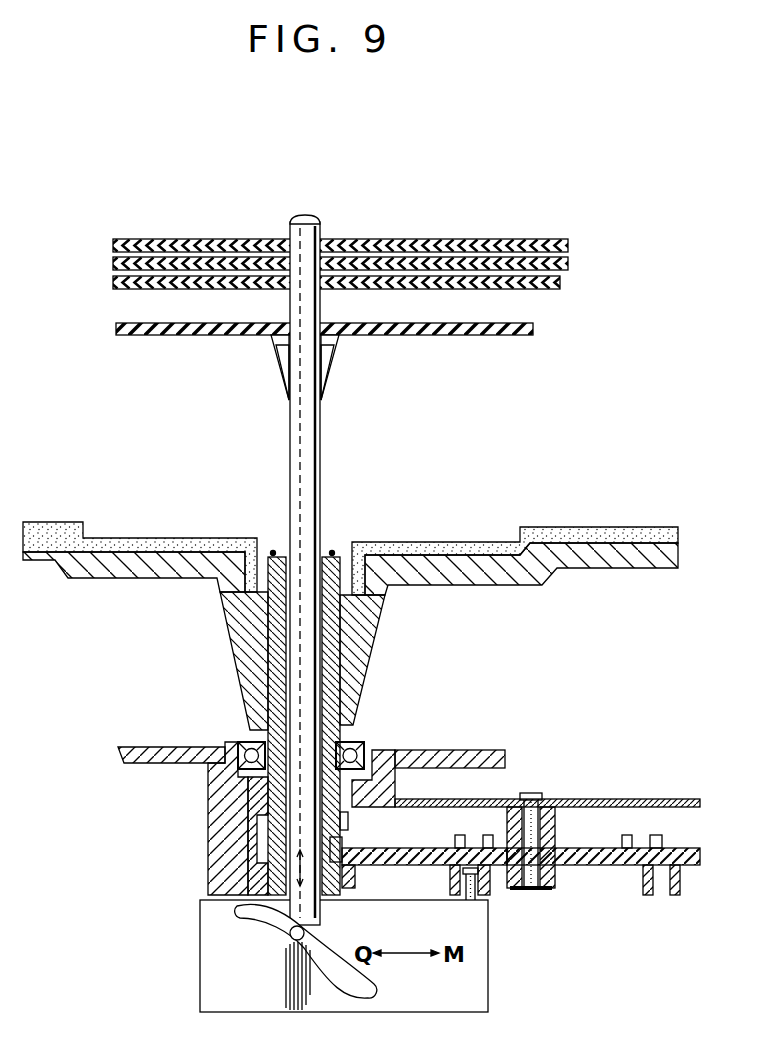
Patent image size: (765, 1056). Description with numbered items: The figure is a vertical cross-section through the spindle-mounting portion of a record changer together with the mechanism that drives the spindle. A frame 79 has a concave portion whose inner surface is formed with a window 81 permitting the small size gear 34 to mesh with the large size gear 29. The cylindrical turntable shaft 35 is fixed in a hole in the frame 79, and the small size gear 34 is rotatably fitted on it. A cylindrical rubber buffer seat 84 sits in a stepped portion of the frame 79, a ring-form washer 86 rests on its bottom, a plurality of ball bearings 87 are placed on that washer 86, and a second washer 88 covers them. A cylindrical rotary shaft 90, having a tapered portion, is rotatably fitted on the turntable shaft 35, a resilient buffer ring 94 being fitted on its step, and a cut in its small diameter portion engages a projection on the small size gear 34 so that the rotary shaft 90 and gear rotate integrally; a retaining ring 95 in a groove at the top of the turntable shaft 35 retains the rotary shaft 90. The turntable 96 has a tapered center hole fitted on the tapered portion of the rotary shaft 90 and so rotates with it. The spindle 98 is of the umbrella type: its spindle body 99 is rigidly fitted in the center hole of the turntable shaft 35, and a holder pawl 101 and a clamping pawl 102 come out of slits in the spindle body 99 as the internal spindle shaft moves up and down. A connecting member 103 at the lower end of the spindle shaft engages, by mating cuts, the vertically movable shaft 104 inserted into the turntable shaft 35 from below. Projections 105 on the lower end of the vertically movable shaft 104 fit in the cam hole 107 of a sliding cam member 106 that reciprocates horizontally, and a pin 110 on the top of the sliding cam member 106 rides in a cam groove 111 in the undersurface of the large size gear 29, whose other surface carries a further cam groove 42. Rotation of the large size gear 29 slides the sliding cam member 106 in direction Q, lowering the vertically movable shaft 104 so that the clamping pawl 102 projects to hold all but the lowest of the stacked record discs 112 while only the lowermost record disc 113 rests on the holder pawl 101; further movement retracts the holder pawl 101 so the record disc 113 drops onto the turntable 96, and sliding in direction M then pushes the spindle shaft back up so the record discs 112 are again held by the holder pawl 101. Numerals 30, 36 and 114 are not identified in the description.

The large size gear 29 is at (600, 865).
The bolt 30 is at (528, 797).
The small size gear 34 is at (235, 840).
The turntable shaft 35 is at (268, 650).
The collar 36 is at (346, 824).
The cam groove 42 is at (640, 848).
The frame 79 is at (478, 748).
The window 81 is at (345, 846).
The buffer seat 84 is at (372, 790).
The washer 86 is at (225, 782).
The ball bearings 87 is at (372, 751).
The washer 88 is at (245, 745).
The cylindrical rotary shaft 90 is at (358, 686).
The buffer ring 94 is at (352, 742).
The retaining ring 95 is at (335, 555).
The turntable 96 is at (113, 560).
The spindle 98 is at (301, 217).
The spindle body 99 is at (320, 468).
The holder pawl 101 is at (280, 374).
The clamping pawl 102 is at (290, 292).
The connecting member 103 is at (252, 810).
The vertically movable shaft 104 is at (306, 930).
The projections 105 is at (285, 940).
The sliding cam member 106 is at (480, 975).
The cam hole 107 is at (250, 912).
The pin 110 is at (487, 897).
The cam groove 111 is at (660, 892).
The record discs 112 is at (377, 290).
The lowermost record disc 113 is at (533, 336).
The plate 114 is at (541, 291).